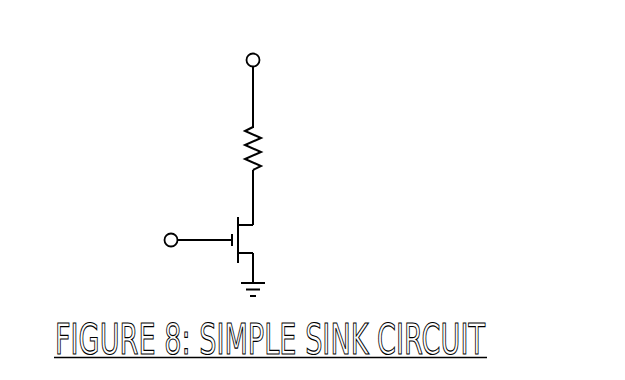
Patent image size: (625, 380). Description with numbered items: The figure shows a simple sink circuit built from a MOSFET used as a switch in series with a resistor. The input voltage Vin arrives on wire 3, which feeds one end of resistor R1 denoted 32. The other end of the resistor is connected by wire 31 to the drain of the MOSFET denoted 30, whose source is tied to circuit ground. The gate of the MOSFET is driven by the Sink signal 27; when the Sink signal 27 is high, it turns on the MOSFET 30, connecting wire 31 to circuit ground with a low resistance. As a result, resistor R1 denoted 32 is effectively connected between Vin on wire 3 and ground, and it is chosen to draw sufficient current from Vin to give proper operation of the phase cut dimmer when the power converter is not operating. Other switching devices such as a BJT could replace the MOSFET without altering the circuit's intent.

The wire 3 is at (255, 80).
The resistor R1 32 is at (253, 128).
The wire 31 is at (256, 206).
The MOSFET M4 30 is at (247, 242).
The Sink signal 27 is at (209, 239).
The resistor R1 is at (268, 148).